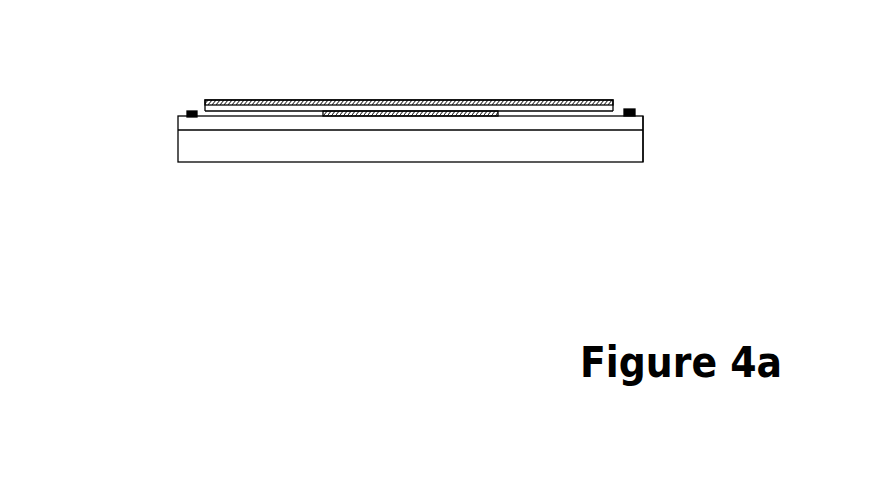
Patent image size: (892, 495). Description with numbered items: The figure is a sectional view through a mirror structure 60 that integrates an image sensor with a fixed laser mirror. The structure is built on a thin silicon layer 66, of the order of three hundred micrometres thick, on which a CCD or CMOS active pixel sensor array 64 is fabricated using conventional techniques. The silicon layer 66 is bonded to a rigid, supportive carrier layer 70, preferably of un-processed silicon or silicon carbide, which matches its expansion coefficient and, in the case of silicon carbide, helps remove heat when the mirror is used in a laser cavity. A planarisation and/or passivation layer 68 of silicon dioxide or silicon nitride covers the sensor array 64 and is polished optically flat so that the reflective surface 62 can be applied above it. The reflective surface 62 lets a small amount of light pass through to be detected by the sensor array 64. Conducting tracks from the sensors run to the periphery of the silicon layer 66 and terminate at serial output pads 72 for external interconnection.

The mirror structure 60 is at (268, 248).
The reflective surface 62 is at (277, 100).
The active pixel sensor array 64 is at (517, 100).
The silicon layer 66 is at (643, 122).
The planarisation and/or passivation layer 68 is at (620, 108).
The carrier layer 70 is at (178, 147).
The serial output pads 72 is at (187, 112).